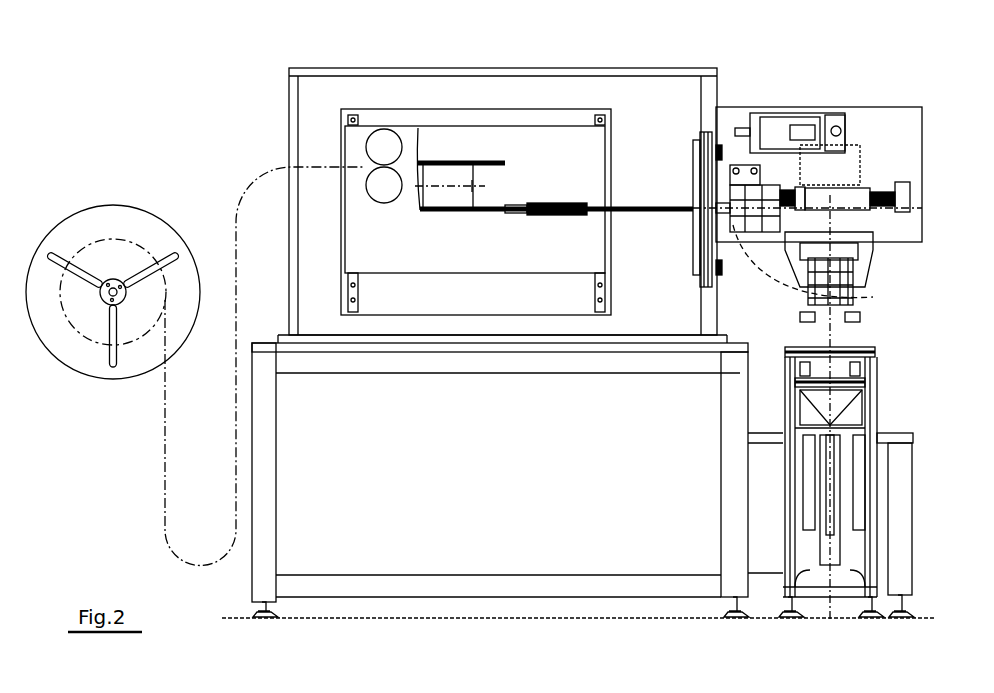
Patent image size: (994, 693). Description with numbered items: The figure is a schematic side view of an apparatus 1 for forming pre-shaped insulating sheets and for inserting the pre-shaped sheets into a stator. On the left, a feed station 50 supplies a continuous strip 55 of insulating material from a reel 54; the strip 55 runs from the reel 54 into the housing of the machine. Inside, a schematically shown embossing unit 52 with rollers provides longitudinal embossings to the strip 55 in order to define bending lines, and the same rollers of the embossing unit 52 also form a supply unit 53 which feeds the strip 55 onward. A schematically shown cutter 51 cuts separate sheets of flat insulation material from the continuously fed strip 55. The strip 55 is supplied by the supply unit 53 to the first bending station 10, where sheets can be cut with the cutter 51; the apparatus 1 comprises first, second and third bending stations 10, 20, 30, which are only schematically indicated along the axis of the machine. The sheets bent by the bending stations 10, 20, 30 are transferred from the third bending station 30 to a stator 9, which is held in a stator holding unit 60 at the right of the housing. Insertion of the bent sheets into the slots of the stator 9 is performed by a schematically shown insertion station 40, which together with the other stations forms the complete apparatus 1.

The apparatus 1 is at (587, 353).
The stator 9 is at (762, 192).
The first bending station 10 is at (556, 237).
The second bending station 20 is at (556, 237).
The third bending station 30 is at (422, 217).
The insertion station 40 is at (653, 148).
The feed station 50 is at (108, 248).
The cutter 51 is at (425, 132).
The embossing unit 52 is at (389, 114).
The supply unit 53 is at (386, 130).
The reel 54 is at (63, 340).
The strip 55 is at (165, 433).
The stator holding unit 60 is at (718, 137).